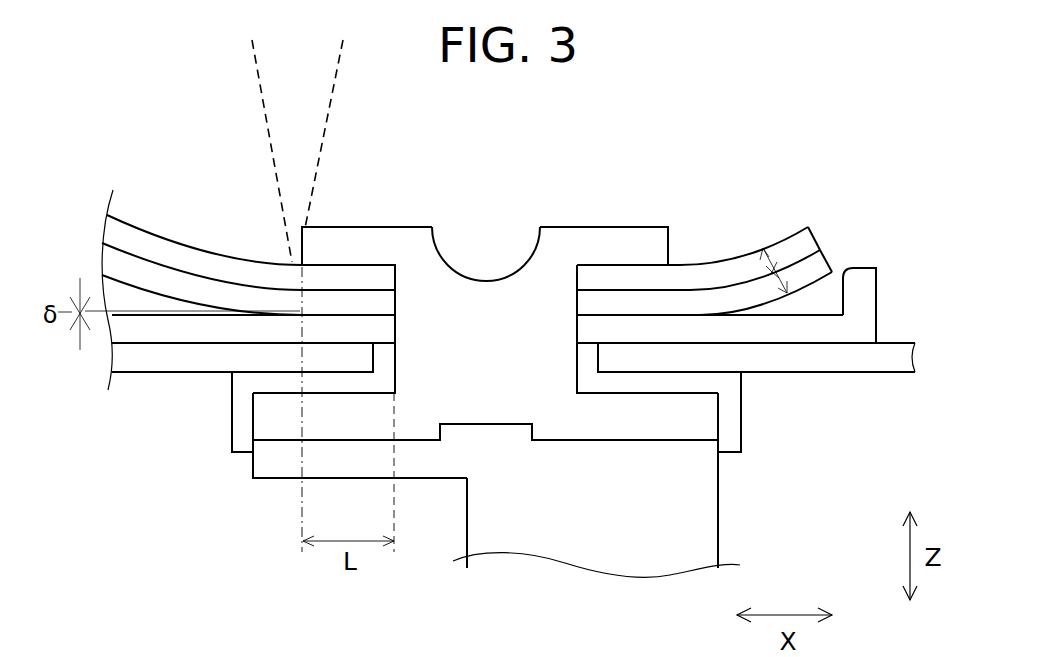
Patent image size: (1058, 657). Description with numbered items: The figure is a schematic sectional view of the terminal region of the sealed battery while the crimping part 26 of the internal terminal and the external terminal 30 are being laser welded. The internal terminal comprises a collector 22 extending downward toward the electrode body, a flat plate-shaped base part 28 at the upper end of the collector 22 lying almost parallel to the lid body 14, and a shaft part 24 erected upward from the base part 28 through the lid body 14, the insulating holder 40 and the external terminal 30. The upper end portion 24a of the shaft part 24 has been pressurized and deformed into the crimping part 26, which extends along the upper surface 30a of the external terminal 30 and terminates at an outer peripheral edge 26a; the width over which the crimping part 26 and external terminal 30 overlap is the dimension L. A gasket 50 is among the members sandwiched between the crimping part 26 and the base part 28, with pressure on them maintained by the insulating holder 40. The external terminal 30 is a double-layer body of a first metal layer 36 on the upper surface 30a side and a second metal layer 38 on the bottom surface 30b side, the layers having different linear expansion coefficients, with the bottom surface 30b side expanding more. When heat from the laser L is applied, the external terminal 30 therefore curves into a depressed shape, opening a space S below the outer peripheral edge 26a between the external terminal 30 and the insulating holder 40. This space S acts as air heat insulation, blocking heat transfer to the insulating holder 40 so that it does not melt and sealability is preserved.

The lid body 14 is at (886, 356).
The collector 22 is at (719, 543).
The shaft part 24 is at (483, 297).
The upper end portion 24a is at (554, 234).
The crimping part 26 is at (437, 218).
The outer peripheral edge 26a is at (303, 232).
The base part 28 is at (684, 420).
The external terminal 30 is at (767, 235).
The upper surface 30a is at (145, 230).
The bottom surface 30b is at (127, 284).
The first metal layer 36 is at (705, 264).
The second metal layer 38 is at (826, 262).
The insulating holder 40 is at (878, 277).
The gasket 50 is at (742, 404).
The laser L is at (259, 80).
The space S is at (258, 314).